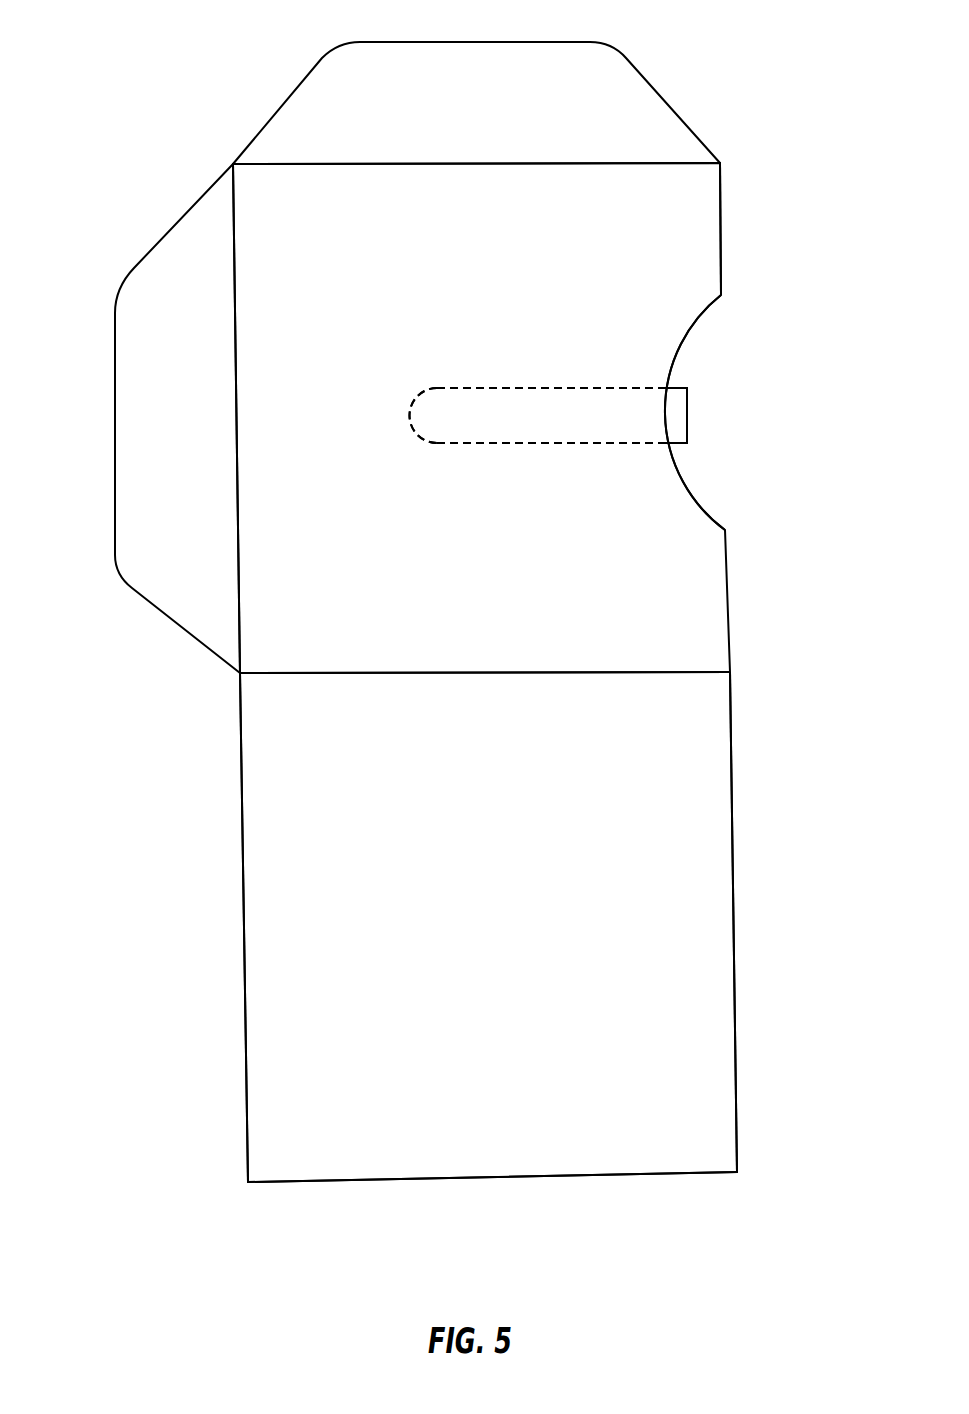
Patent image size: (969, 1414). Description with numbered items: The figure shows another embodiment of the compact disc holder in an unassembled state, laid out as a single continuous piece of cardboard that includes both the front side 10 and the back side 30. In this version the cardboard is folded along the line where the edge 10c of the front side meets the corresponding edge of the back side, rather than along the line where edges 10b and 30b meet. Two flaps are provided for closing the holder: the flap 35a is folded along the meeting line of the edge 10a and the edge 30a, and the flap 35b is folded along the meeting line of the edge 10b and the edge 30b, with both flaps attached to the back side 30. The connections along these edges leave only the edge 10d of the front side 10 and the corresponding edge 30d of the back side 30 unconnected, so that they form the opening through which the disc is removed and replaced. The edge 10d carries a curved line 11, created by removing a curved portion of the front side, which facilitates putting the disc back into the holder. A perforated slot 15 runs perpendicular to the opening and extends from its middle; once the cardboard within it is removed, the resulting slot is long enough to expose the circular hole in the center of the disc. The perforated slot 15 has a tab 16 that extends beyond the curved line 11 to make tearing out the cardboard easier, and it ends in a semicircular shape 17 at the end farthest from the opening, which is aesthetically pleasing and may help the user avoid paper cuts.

The front side 10 is at (640, 193).
The edge of the front side 10a is at (472, 162).
The edge of the front side 10b is at (238, 495).
The edge of the front side 10c is at (480, 671).
The edge of the front side 10d is at (723, 203).
The curved line 11 is at (690, 500).
The perforated slot 15 is at (487, 385).
The tab 16 is at (672, 425).
The semicircular shape 17 is at (410, 415).
The back side 30 is at (725, 1050).
The edge of the back side 30a is at (488, 1180).
The edge of the back side 30b is at (243, 870).
The edge of the back side 30d is at (733, 862).
The flap 35a is at (470, 56).
The flap 35b is at (132, 495).